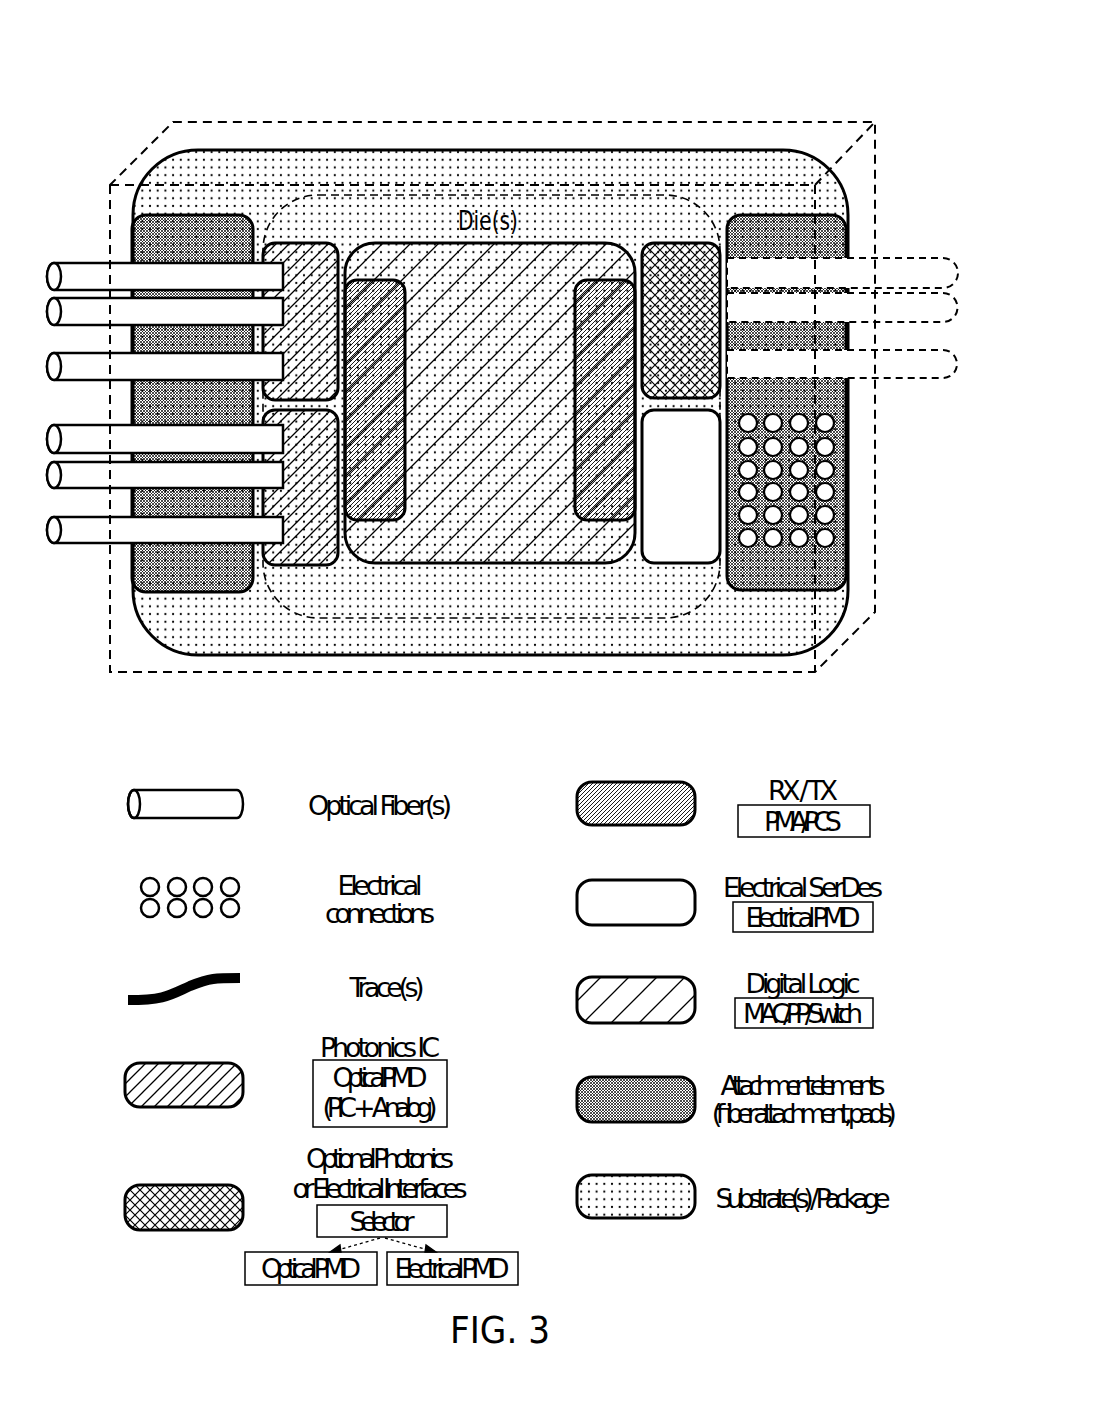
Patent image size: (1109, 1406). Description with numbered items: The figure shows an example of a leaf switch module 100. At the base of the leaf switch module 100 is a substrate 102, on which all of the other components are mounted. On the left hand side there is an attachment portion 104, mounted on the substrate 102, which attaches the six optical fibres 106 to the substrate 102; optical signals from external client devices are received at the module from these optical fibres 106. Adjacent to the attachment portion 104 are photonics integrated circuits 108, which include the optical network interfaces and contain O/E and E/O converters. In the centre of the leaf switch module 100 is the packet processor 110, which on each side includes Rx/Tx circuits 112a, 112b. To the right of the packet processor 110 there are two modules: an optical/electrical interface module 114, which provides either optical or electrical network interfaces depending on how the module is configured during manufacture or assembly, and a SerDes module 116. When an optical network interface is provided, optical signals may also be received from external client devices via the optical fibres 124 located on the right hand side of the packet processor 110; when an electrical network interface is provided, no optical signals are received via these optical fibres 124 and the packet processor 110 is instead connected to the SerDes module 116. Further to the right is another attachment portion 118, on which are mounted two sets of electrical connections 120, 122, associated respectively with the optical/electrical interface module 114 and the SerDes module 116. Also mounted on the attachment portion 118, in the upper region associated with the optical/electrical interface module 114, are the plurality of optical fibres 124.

The leaf switch module 100 is at (203, 76).
The substrate 102 is at (535, 150).
The attachment portion 104 is at (143, 215).
The optical fibres 106 is at (88, 381).
The photonics integrated circuits 108 is at (300, 565).
The packet processor 110 is at (410, 243).
The Rx/Tx circuit 112a is at (372, 520).
The Rx/Tx circuit 112b is at (605, 520).
The optical/electrical interface module 114 is at (680, 243).
The SerDes module 116 is at (677, 563).
The attachment portion 118 is at (778, 215).
The electrical connections 120 is at (848, 402).
The electrical connections 122 is at (848, 517).
The optical fibres 124 is at (897, 257).